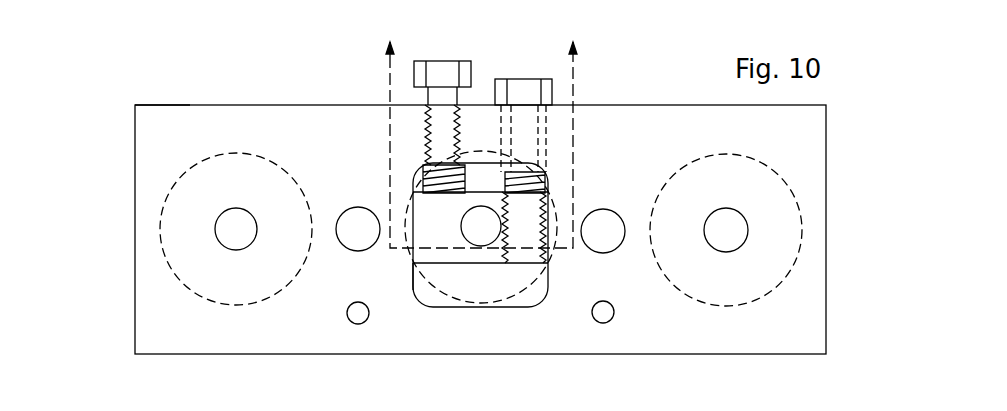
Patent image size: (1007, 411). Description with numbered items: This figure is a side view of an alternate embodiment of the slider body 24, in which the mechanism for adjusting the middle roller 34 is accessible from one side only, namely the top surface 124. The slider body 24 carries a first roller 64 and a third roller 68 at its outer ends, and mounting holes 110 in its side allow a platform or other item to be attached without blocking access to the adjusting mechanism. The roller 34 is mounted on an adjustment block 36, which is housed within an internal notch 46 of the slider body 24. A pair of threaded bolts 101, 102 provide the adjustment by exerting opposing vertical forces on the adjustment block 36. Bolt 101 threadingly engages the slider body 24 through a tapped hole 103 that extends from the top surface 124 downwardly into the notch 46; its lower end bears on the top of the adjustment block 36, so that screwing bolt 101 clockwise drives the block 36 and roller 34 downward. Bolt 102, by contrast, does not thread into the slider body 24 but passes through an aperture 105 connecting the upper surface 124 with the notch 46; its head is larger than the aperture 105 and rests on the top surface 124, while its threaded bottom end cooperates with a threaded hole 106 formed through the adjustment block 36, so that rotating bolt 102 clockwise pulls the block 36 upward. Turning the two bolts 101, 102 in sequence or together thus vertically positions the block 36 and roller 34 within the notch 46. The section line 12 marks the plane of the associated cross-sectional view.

The slider body 24 is at (130, 71).
The top surface 124 is at (170, 113).
The first roller 64 is at (232, 152).
The third roller 68 is at (770, 168).
The mounting holes 110 is at (350, 238).
The roller 34 is at (418, 270).
The adjustment block 36 is at (468, 255).
The notch 46 is at (415, 298).
The threaded hole 106 is at (533, 258).
The section line 12- 12 is at (489, 130).
The bolt 101 is at (440, 60).
The bolt 102 is at (523, 79).
The tapped hole 103 is at (423, 137).
The aperture 105 is at (547, 138).